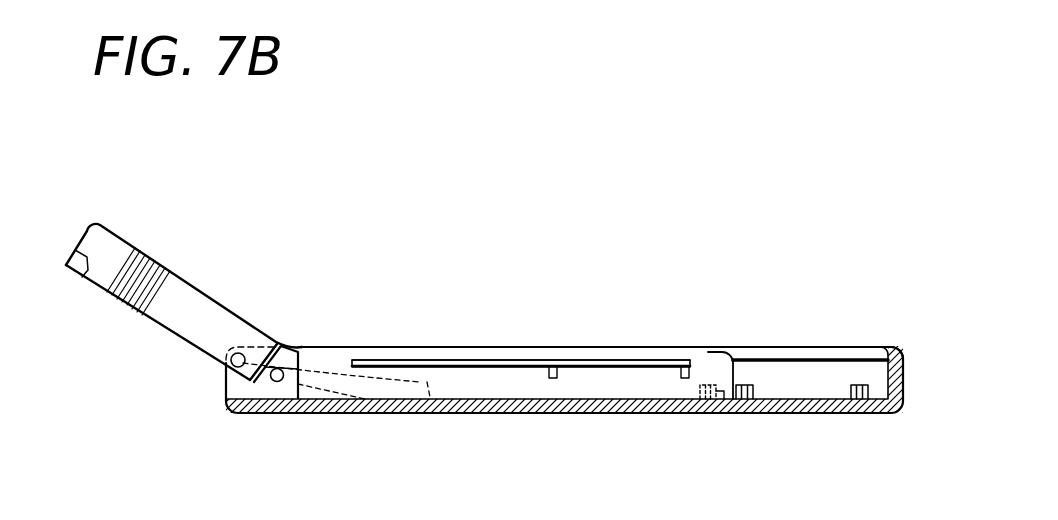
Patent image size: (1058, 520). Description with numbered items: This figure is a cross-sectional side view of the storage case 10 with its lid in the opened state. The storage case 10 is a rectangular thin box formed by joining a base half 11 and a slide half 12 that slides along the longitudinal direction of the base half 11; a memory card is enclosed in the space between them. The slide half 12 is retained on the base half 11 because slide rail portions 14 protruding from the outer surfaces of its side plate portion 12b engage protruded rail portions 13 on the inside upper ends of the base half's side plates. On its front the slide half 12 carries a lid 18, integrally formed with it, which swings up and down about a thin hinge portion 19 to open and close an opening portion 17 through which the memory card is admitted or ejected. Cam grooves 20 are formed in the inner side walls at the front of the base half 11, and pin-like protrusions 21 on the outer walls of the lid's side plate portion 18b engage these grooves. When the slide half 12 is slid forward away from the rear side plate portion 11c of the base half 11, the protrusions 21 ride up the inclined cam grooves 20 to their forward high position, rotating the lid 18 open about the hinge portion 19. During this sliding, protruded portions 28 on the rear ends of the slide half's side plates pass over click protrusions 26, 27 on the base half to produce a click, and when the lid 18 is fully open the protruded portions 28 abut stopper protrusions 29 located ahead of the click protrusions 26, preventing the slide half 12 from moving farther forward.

The storage case 10 is at (373, 328).
The base half 11 is at (630, 412).
The rear side plate portion 11c is at (904, 352).
The slide half 12 is at (592, 348).
The side plate portion 12b is at (507, 368).
The protruded rail portion 13 is at (808, 356).
The slide rail portion 14 is at (448, 366).
The opening portion 17 is at (211, 378).
The lid 18 is at (138, 250).
The side plate portion 18b is at (180, 298).
The hinge portion 19 is at (297, 346).
The cam groove 20 is at (280, 382).
The pin-like protrusion 21 is at (240, 352).
The click protrusion 26 is at (746, 384).
The click protrusion 27 is at (862, 384).
The protruded portion 28 is at (722, 399).
The stopper protrusion 29 is at (705, 392).